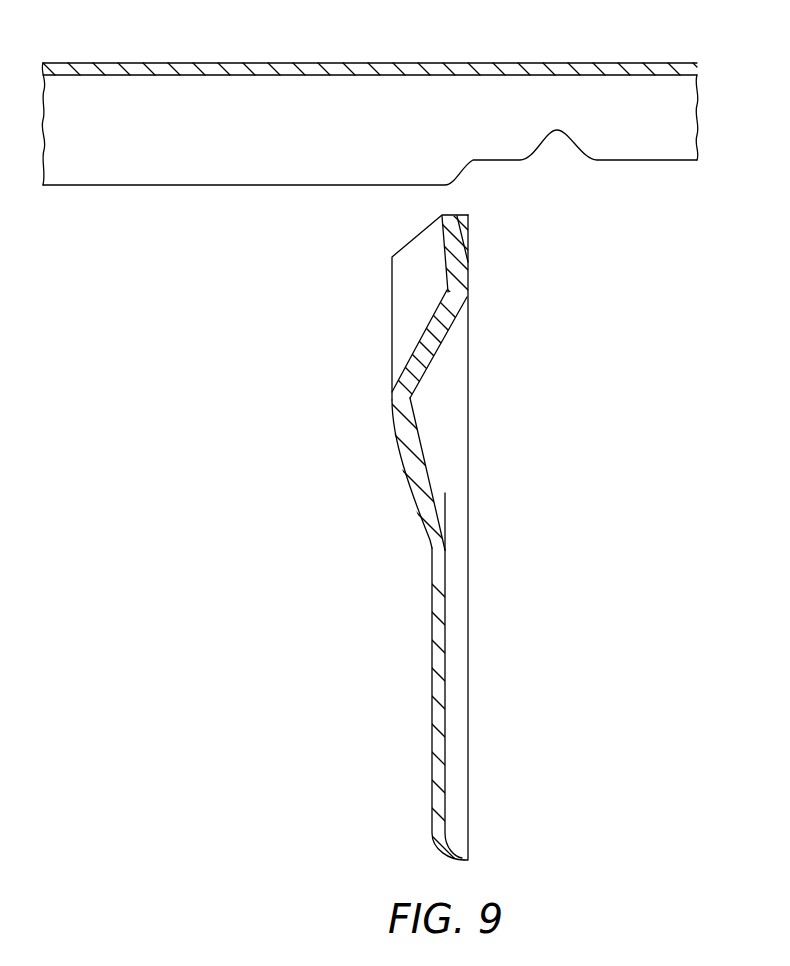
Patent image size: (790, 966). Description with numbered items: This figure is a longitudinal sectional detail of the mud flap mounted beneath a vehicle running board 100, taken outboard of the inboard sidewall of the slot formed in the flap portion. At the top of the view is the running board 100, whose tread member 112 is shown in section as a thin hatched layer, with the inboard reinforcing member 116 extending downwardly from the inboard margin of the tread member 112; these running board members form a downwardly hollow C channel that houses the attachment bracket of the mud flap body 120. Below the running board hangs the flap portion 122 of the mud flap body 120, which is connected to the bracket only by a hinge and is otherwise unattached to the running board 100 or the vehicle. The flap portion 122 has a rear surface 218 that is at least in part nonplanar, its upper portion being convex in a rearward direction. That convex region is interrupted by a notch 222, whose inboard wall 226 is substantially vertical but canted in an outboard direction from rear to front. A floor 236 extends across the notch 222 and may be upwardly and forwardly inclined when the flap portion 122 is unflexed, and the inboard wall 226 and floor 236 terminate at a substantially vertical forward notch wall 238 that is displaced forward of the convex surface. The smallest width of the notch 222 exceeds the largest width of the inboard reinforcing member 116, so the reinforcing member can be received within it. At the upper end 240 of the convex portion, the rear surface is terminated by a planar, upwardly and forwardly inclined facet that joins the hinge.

The running board 100 is at (370, 123).
The tread member 112 is at (483, 63).
The inboard reinforcing member 116 is at (167, 163).
The mud flap body 120 is at (421, 692).
The flap portion 122 is at (460, 740).
The rear surface 218 is at (403, 480).
The notch 222 is at (382, 417).
The inboard wall 226 is at (405, 273).
The floor 236 is at (423, 347).
The forward notch wall 238 is at (437, 251).
The upper end 240 is at (372, 474).